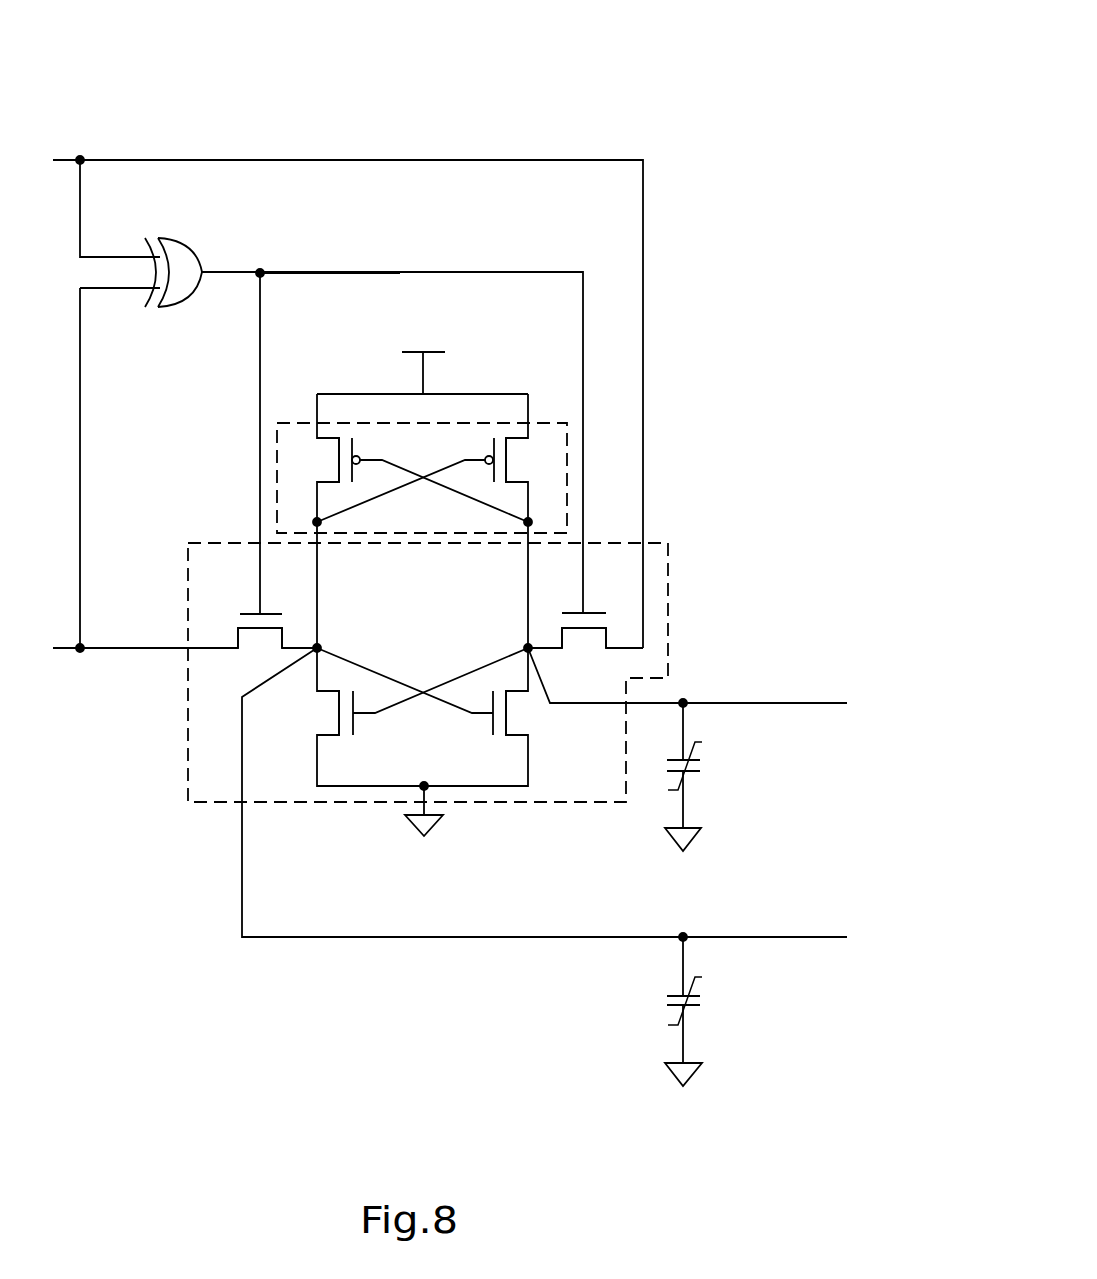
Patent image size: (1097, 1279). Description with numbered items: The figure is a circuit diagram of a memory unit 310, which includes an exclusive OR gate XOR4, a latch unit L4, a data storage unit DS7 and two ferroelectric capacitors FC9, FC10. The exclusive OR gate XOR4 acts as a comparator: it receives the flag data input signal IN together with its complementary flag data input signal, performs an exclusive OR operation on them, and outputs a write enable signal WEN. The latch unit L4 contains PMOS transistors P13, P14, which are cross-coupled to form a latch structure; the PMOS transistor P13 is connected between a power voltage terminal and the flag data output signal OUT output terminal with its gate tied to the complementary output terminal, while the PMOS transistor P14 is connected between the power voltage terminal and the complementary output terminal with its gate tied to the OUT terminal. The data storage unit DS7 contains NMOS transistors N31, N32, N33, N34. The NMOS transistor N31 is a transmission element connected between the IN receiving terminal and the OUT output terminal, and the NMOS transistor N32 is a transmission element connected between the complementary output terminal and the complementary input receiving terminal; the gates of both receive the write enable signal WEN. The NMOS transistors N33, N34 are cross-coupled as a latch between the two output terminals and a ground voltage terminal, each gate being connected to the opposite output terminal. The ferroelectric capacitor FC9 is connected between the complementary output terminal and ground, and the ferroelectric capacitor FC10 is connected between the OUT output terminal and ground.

The memory unit 310 is at (680, 86).
The exclusive OR gate XOR4 is at (174, 253).
The latch unit L4 is at (553, 423).
The data storage unit DS7 is at (668, 543).
The PMOS transistor P13 is at (409, 480).
The PMOS transistor P14 is at (437, 480).
The NMOS transistor N31 is at (246, 612).
The NMOS transistor N32 is at (599, 613).
The NMOS transistor N33 is at (405, 691).
The NMOS transistor N34 is at (422, 709).
The ferroelectric capacitor FC9 is at (712, 777).
The ferroelectric capacitor FC10 is at (720, 1011).
The flag data input signal IN is at (86, 668).
The write enable signal WEN is at (330, 251).
The flag data output signal OUT is at (773, 917).